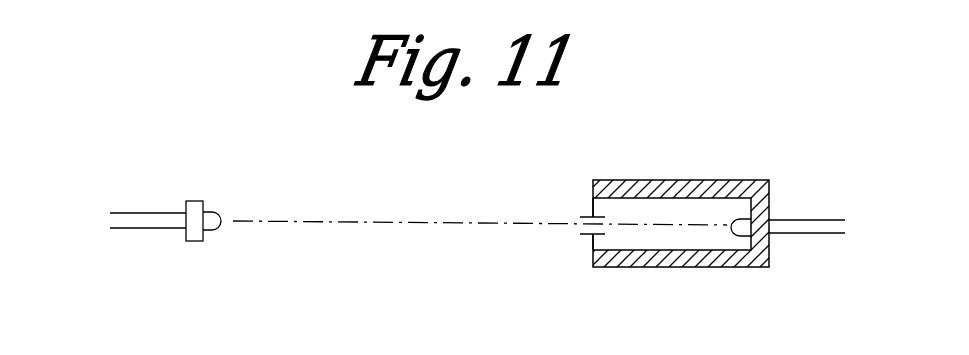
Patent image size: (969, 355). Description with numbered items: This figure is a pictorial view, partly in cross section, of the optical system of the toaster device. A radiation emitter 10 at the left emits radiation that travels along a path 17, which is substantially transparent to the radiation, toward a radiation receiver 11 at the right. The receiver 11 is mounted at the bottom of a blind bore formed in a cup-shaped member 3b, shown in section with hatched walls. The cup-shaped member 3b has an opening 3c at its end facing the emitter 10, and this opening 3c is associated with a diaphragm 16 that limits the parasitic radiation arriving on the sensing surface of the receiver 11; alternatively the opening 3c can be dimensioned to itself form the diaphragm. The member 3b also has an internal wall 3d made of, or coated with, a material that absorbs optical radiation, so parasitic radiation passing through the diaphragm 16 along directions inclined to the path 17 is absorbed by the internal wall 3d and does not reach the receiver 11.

The radiation emitter 10 is at (193, 243).
The path 17 is at (367, 223).
The cup-shaped member 3b is at (666, 242).
The internal wall 3d is at (664, 203).
The opening 3c is at (556, 203).
The diaphragm 16 is at (583, 238).
The radiation receiver 11 is at (737, 238).